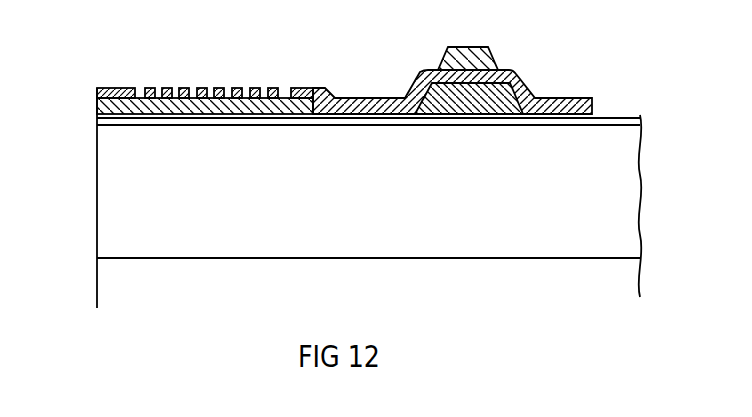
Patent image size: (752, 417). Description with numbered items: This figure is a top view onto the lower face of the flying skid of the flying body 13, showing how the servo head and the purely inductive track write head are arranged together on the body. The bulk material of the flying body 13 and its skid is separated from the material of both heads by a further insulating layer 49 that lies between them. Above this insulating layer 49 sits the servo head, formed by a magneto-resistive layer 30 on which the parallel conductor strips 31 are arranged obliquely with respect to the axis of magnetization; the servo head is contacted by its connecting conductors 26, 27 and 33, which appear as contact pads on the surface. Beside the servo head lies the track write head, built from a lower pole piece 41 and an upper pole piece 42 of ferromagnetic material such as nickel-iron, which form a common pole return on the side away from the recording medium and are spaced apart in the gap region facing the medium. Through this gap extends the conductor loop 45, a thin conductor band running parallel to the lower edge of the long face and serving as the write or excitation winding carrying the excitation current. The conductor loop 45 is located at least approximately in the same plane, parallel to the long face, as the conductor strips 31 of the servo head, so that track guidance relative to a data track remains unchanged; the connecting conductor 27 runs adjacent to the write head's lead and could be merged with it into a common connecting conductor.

The flying body 13 is at (112, 213).
The connecting conductor 26 is at (108, 88).
The connecting conductor 27 is at (302, 88).
The magneto-resistive layer 30 is at (262, 108).
The conductor strips 31 is at (165, 88).
The connecting conductor 33 is at (201, 88).
The lower pole piece 41 is at (438, 105).
The upper pole piece 42 is at (469, 49).
The conductor loop 45 is at (503, 72).
The insulating layer 49 is at (102, 120).